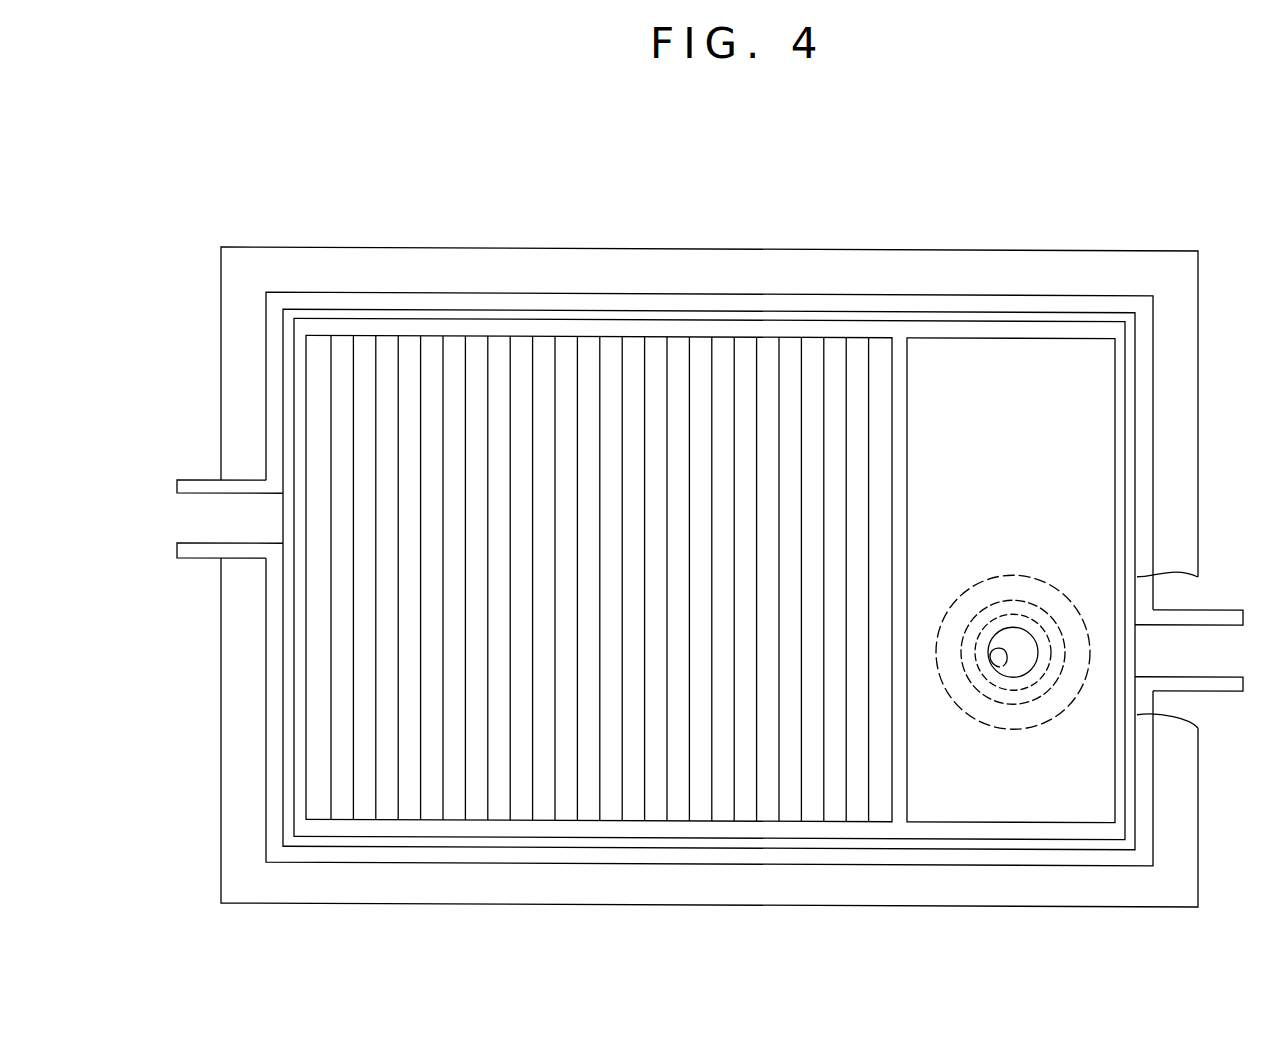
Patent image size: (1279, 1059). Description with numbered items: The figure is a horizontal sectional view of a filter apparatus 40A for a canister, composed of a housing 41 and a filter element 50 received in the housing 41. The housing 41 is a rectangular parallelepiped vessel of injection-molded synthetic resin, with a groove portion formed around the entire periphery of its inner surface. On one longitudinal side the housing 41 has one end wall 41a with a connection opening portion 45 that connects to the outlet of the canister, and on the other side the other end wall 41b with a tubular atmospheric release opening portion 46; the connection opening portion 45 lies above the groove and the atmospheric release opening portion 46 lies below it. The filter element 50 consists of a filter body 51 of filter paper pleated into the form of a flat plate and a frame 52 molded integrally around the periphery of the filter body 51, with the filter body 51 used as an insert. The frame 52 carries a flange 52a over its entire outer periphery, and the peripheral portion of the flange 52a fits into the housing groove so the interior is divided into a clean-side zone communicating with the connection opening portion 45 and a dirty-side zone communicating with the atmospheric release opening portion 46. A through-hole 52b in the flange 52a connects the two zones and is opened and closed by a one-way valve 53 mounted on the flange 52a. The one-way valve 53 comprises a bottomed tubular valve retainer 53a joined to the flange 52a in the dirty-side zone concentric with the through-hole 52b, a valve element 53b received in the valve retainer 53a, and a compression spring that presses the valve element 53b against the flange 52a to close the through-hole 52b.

The filter apparatus 40A is at (1183, 210).
The housing 41 is at (1192, 354).
The one end wall 41a is at (273, 412).
The other end wall 41b is at (1147, 513).
The connection opening portion 45 is at (188, 553).
The atmospheric release opening portion 46 is at (1232, 679).
The filter element 50 is at (980, 209).
The filter body 51 is at (833, 349).
The frame 52 is at (902, 362).
The flange 52a is at (1022, 352).
The through-hole 52b is at (1000, 664).
The one-way valve 53 is at (1030, 574).
The valve retainer 53a is at (1035, 694).
The valve element 53b is at (1007, 634).